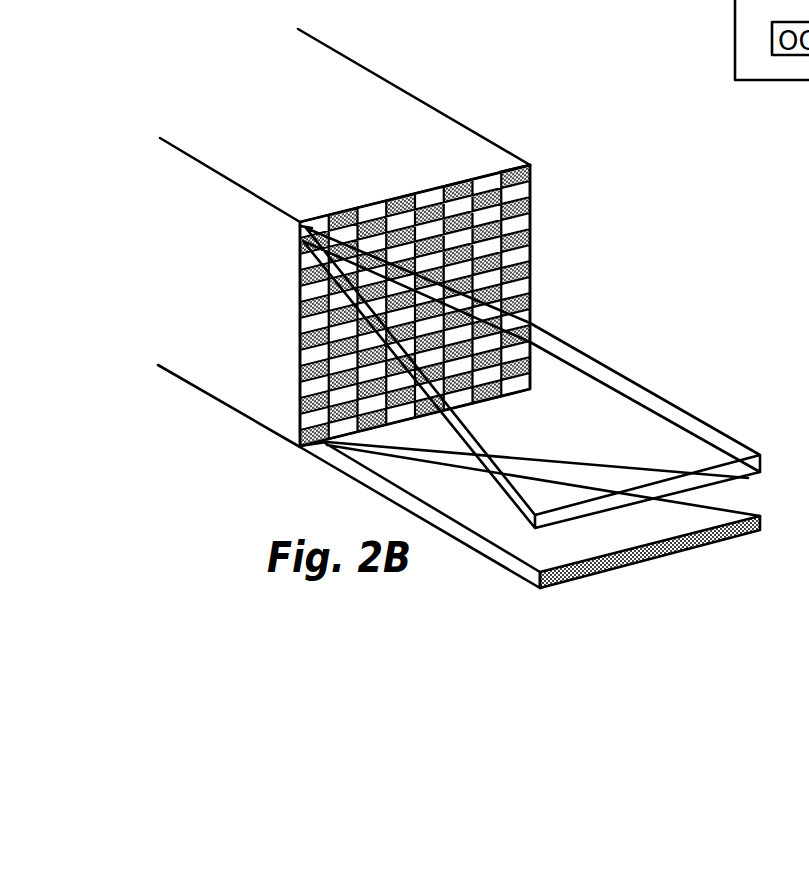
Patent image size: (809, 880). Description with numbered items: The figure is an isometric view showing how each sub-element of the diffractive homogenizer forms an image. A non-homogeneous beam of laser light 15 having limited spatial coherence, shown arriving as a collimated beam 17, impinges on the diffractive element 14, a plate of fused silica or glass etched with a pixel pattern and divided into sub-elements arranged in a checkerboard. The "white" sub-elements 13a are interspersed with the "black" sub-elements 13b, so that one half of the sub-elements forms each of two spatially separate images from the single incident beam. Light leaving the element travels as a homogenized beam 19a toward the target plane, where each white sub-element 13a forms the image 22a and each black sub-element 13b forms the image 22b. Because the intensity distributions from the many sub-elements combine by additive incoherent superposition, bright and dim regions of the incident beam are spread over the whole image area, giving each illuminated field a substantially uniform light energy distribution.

The white sub-element 13a is at (306, 229).
The black sub-element 13b is at (293, 445).
The diffractive element 14 is at (546, 170).
The beam of laser light 15 is at (352, 153).
The collimated beam 17 is at (529, 163).
The homogenized beam 19a is at (597, 360).
The image 22a is at (742, 477).
The image 22b is at (683, 552).